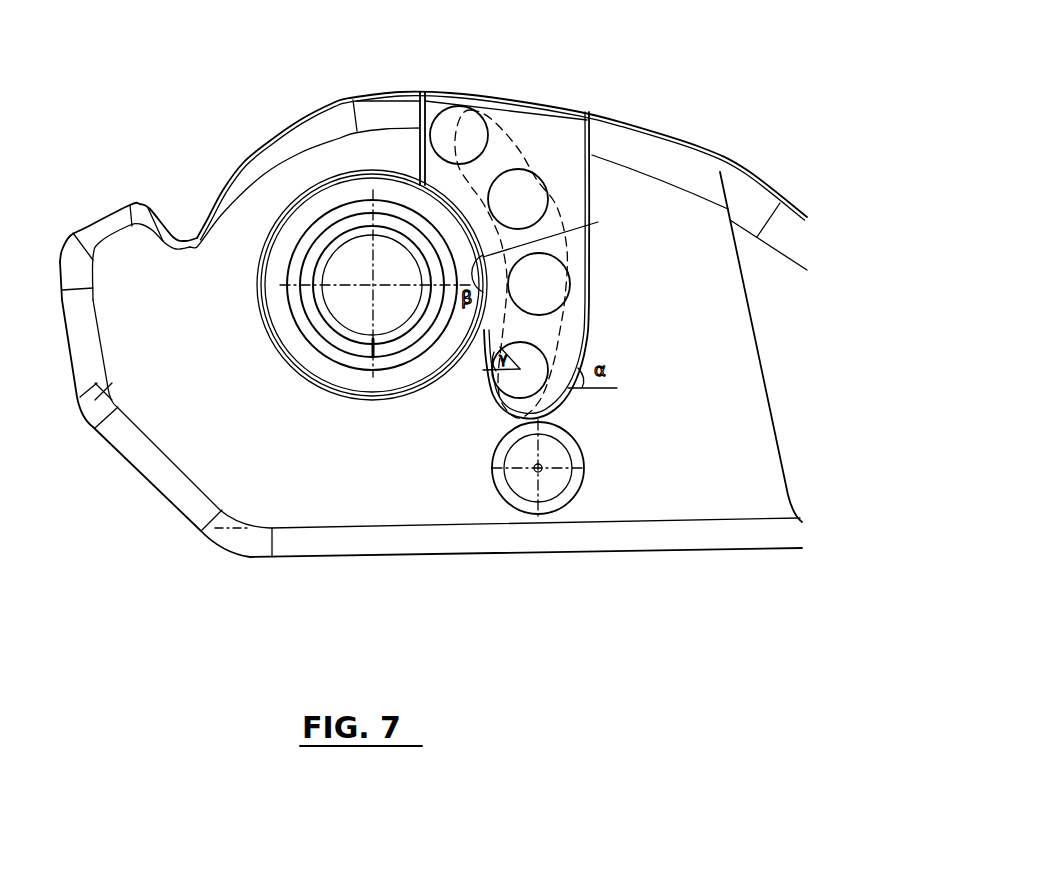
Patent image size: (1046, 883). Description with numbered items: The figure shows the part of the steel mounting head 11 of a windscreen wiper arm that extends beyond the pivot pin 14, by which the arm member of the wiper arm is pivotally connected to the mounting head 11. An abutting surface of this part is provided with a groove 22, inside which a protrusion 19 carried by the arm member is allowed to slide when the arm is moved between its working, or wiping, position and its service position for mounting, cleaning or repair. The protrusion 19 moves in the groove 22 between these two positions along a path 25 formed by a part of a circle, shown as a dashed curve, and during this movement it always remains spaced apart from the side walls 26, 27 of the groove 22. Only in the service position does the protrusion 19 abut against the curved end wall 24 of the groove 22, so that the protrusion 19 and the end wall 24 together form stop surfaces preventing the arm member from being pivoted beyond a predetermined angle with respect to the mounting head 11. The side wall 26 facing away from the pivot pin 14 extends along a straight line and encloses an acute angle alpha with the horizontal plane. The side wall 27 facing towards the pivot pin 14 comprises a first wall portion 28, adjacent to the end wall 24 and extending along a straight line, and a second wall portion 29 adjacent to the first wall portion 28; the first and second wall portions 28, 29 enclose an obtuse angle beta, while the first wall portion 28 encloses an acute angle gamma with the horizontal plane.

The mounting head 11 is at (682, 163).
The pivot pin 14 is at (353, 307).
The protrusion 19 is at (548, 197).
The groove 22 is at (558, 135).
The end wall 24 is at (498, 413).
The path 25 is at (497, 150).
The side wall 26 is at (587, 340).
The side wall 27 is at (540, 285).
The first wall portion 28 is at (486, 350).
The second wall portion 29 is at (445, 208).